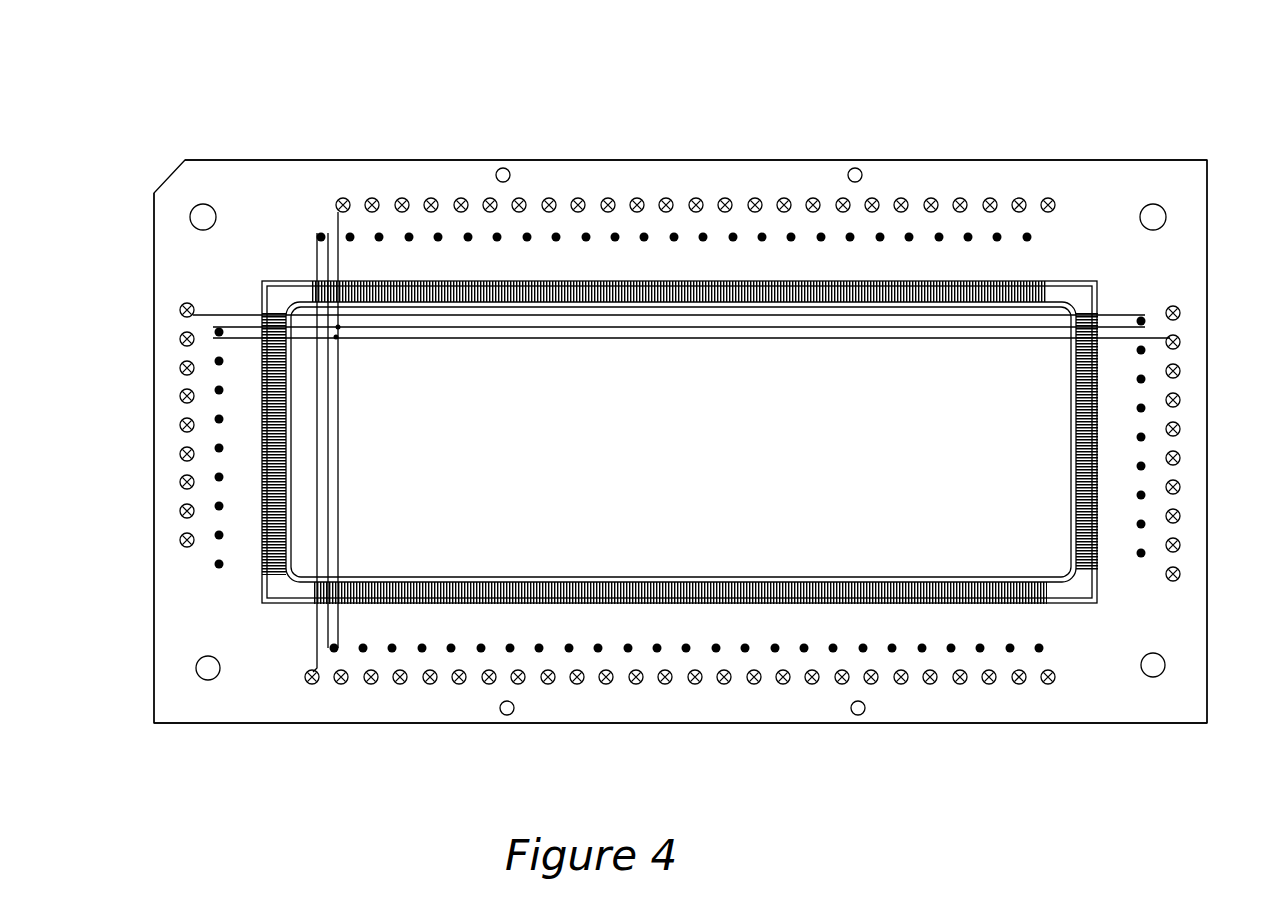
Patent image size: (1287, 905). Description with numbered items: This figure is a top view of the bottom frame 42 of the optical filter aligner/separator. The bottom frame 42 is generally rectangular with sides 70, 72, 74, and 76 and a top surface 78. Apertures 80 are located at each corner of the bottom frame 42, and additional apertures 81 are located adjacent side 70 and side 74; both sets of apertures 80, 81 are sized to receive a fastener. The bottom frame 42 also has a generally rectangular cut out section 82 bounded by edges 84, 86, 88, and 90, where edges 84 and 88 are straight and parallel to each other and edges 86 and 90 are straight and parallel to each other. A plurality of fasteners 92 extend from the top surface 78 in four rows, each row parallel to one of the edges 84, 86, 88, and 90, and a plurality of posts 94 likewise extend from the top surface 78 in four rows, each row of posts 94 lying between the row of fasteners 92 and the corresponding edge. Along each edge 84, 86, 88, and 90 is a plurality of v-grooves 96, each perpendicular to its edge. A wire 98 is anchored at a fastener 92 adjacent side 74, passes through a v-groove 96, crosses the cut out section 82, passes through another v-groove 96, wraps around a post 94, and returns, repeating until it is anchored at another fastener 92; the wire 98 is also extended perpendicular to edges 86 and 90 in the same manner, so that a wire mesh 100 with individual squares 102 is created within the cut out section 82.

The bottom frame 42 is at (967, 107).
The side 70 is at (664, 160).
The side 72 is at (1210, 400).
The side 74 is at (686, 724).
The side 76 is at (152, 432).
The top surface 78 is at (1085, 192).
The apertures 80 is at (201, 205).
The apertures 81 is at (506, 168).
The cut out section 82 is at (453, 365).
The edge 84 is at (692, 302).
The edge 86 is at (1068, 417).
The edge 88 is at (641, 583).
The edge 90 is at (287, 462).
The plurality of fasteners 92 is at (580, 198).
The plurality of posts 94 is at (500, 243).
The v-grooves 96 is at (806, 302).
The wire 98 is at (550, 340).
The wire mesh 100 is at (336, 336).
The individual squares 102 is at (338, 327).